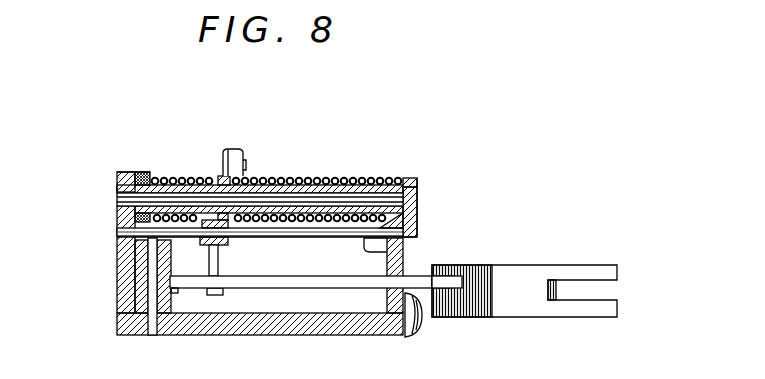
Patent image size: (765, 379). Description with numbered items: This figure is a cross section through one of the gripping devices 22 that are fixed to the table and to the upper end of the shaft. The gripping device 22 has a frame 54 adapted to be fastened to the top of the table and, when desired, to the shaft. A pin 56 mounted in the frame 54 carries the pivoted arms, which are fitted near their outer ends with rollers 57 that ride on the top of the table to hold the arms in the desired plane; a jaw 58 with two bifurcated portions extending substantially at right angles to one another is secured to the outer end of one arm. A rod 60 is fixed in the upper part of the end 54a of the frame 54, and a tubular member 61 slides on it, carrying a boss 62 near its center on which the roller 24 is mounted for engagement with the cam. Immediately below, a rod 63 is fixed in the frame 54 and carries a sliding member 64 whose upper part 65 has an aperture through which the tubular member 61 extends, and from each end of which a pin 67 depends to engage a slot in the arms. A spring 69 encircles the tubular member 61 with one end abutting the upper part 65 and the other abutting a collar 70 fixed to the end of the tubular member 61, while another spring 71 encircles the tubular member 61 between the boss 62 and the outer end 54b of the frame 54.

The gripping device 22 is at (105, 200).
The roller 24 is at (236, 152).
The frame 54 is at (322, 334).
The end of frame 54a is at (115, 256).
The outer end of frame 54b is at (418, 180).
The pin 56 is at (152, 335).
The roller 57 is at (410, 337).
The jaw 58 is at (522, 287).
The rod 60 is at (122, 197).
The tubular member 61 is at (396, 178).
The boss 62 is at (228, 226).
The rod 63 is at (418, 238).
The member 64 is at (226, 247).
The upper part 65 is at (224, 176).
The pin 67 is at (222, 292).
The spring 69 is at (166, 178).
The collar 70 is at (140, 174).
The spring 71 is at (326, 178).